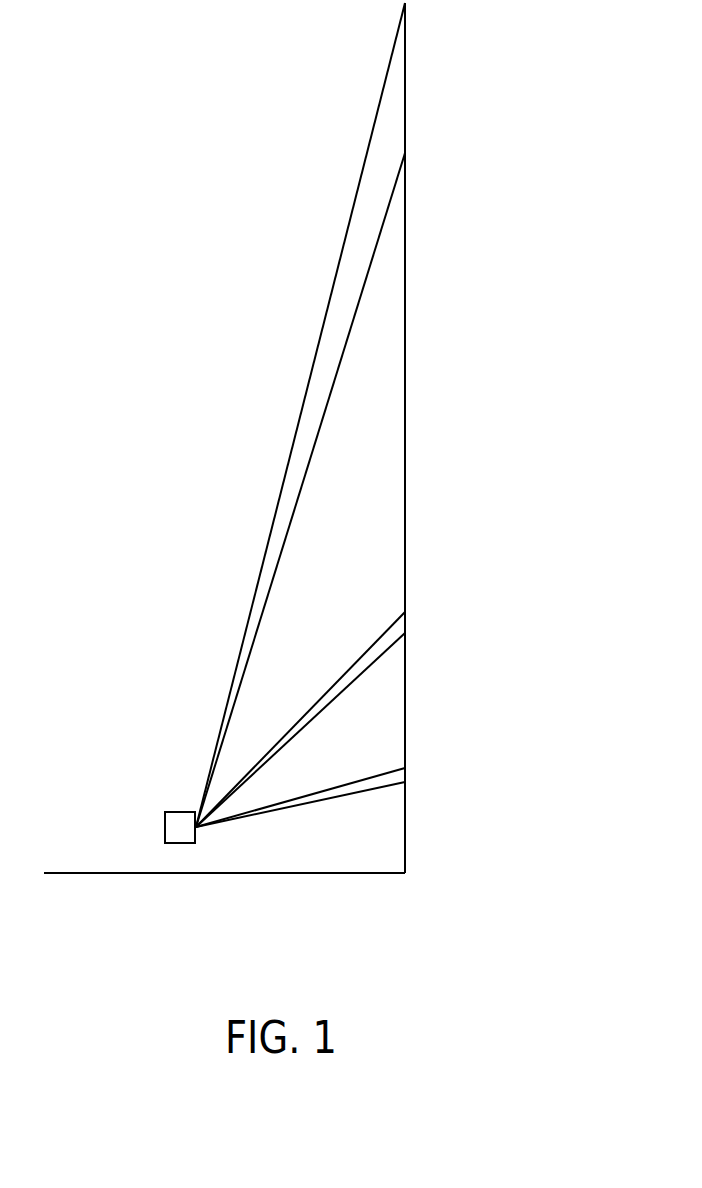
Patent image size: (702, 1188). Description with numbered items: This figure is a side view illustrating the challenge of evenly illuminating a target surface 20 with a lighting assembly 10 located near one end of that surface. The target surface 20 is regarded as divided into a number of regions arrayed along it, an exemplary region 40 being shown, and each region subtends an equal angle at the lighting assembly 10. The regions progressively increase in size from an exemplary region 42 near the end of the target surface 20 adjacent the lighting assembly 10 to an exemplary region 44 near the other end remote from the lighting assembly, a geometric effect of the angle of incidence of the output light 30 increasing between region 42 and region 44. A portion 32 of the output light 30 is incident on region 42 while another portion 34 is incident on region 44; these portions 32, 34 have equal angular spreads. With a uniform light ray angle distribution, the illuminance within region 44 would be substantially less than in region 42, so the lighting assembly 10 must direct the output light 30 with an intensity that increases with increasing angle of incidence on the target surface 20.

The lighting assembly 10 is at (164, 830).
The target surface 20 is at (404, 537).
The output light 30 is at (215, 704).
The portion of the output light 32 is at (356, 787).
The portion of the output light 34 is at (262, 588).
The region 40 is at (407, 612).
The region 42 is at (407, 768).
The region 44 is at (423, 5).